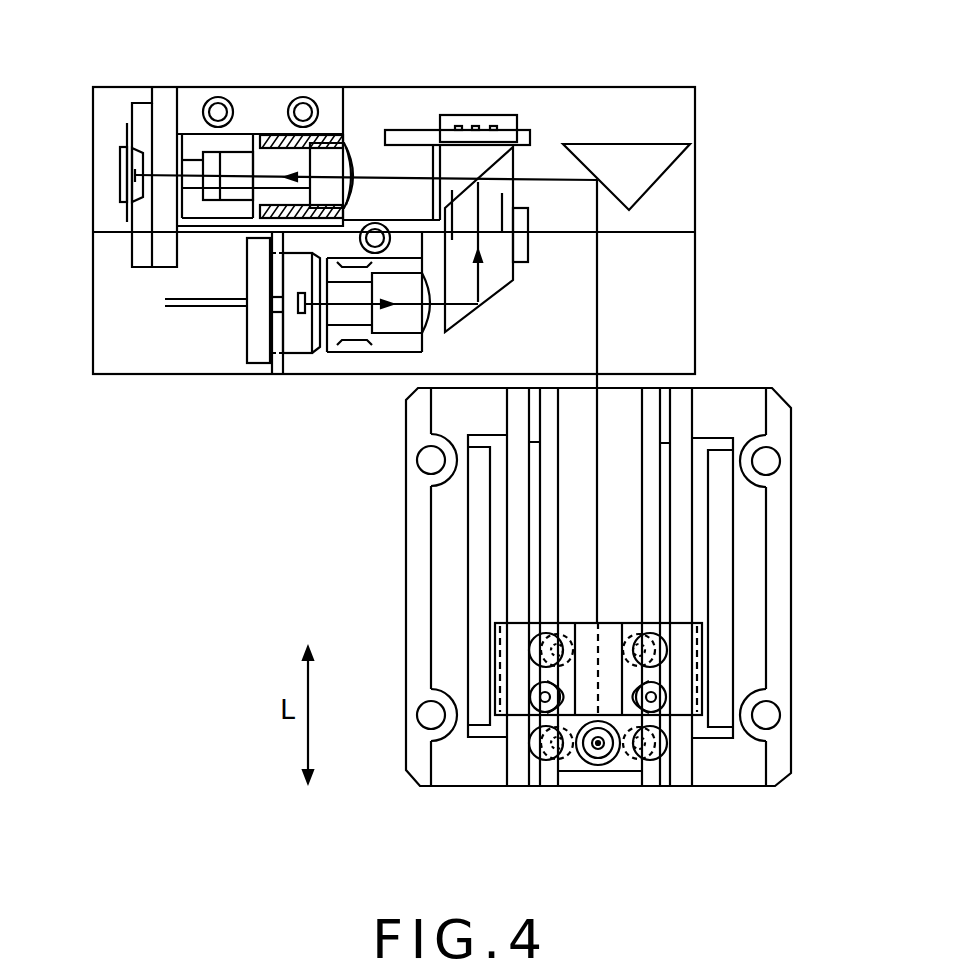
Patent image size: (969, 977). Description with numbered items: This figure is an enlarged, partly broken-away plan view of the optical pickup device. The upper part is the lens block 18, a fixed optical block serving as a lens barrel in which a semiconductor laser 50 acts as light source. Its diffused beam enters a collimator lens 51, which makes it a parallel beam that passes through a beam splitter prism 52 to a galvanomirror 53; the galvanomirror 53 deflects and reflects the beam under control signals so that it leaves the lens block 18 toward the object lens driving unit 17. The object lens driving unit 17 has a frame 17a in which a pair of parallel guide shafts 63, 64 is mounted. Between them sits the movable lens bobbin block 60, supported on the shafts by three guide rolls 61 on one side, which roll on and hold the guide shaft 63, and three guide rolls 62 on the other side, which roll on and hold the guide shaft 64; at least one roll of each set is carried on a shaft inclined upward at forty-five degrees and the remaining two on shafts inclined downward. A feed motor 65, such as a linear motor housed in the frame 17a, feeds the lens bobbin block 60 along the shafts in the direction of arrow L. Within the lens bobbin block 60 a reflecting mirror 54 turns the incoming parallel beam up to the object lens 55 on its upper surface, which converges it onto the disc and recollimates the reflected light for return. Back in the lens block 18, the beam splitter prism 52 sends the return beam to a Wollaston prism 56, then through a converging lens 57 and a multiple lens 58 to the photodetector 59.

The object lens driving unit 17 is at (796, 408).
The frame 17a is at (415, 490).
The lens block 18 is at (616, 84).
The semiconductor laser 50 is at (300, 336).
The collimator lens 51 is at (405, 297).
The beam splitter prism 52 is at (502, 281).
The galvanomirror 53 is at (657, 160).
The reflecting mirror 54 is at (627, 768).
The object lens 55 is at (598, 745).
The Wollaston prism 56 is at (402, 153).
The converging lens 57 is at (333, 147).
The multiple lens 58 is at (208, 153).
The photodetector 59 is at (120, 157).
The lens bobbin block 60 is at (638, 623).
The guide rolls 61 is at (665, 648).
The guide rolls 62 is at (533, 650).
The guide shaft 63 is at (650, 568).
The guide shaft 64 is at (550, 532).
The feed motor 65 is at (717, 698).